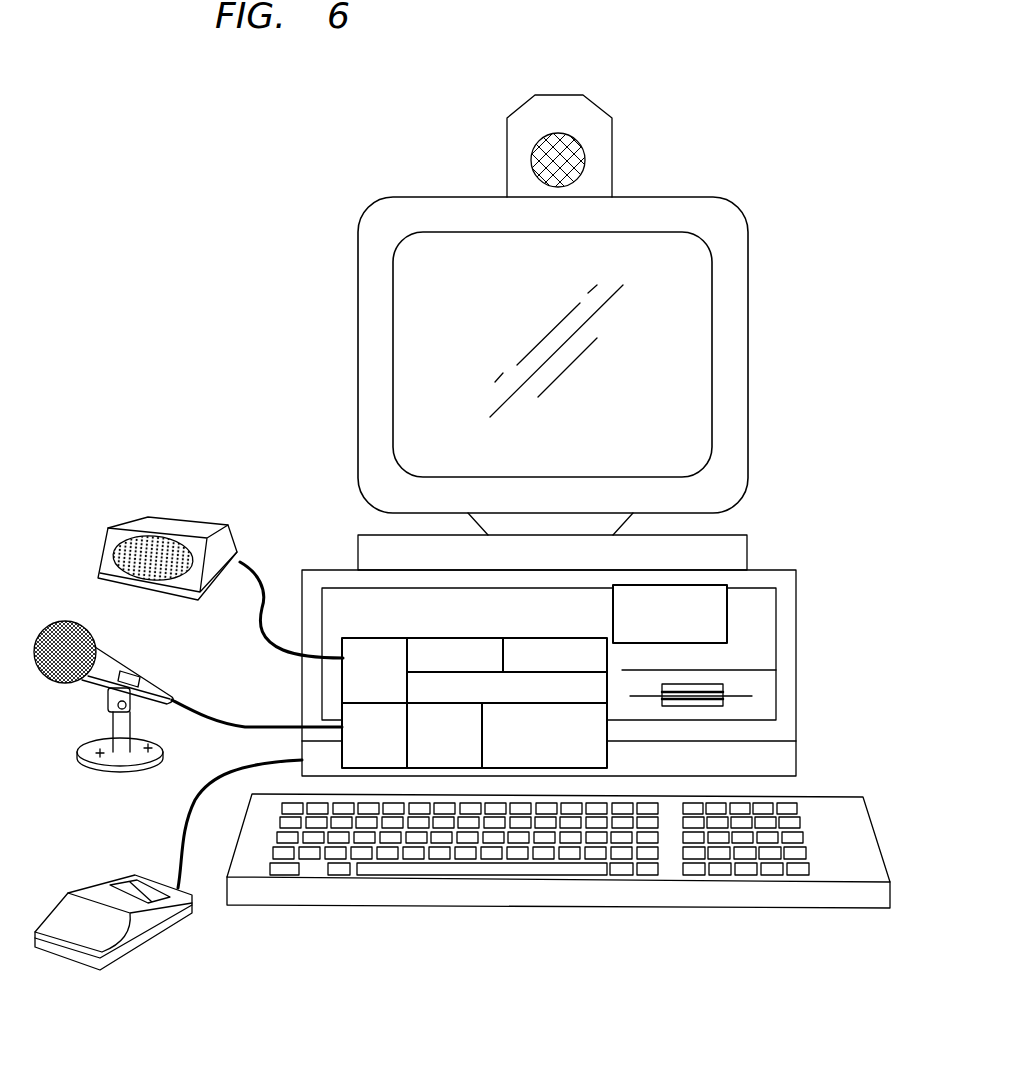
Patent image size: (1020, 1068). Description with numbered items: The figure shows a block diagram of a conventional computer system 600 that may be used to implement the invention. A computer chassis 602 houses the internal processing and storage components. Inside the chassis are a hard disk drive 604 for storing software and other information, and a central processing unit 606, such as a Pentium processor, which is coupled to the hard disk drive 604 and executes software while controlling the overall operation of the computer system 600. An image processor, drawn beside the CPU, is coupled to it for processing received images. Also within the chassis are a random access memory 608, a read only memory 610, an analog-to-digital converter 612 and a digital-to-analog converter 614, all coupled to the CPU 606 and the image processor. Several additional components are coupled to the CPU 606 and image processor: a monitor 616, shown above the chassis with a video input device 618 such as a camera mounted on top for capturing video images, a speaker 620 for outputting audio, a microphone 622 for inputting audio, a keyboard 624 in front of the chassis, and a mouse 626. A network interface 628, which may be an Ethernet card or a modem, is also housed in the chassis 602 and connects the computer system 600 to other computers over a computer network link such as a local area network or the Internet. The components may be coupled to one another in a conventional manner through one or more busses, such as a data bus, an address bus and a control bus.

The computer system 600 is at (389, 98).
The computer chassis 602 is at (797, 680).
The hard disk drive (HDD) 604 is at (607, 688).
The central processing unit (CPU) 606 is at (438, 763).
The random access memory (RAM) 608 is at (430, 642).
The read only memory (ROM) 610 is at (527, 642).
The analog-to-digital (A/D) converter 612 is at (357, 763).
The digital-to-analog (D/A) converter 614 is at (352, 648).
The monitor 616 is at (673, 356).
The video input device 618 is at (578, 160).
The speaker 620 is at (168, 528).
The microphone 622 is at (80, 623).
The keyboard 624 is at (575, 870).
The mouse 626 is at (137, 942).
The network interface 628 is at (718, 593).